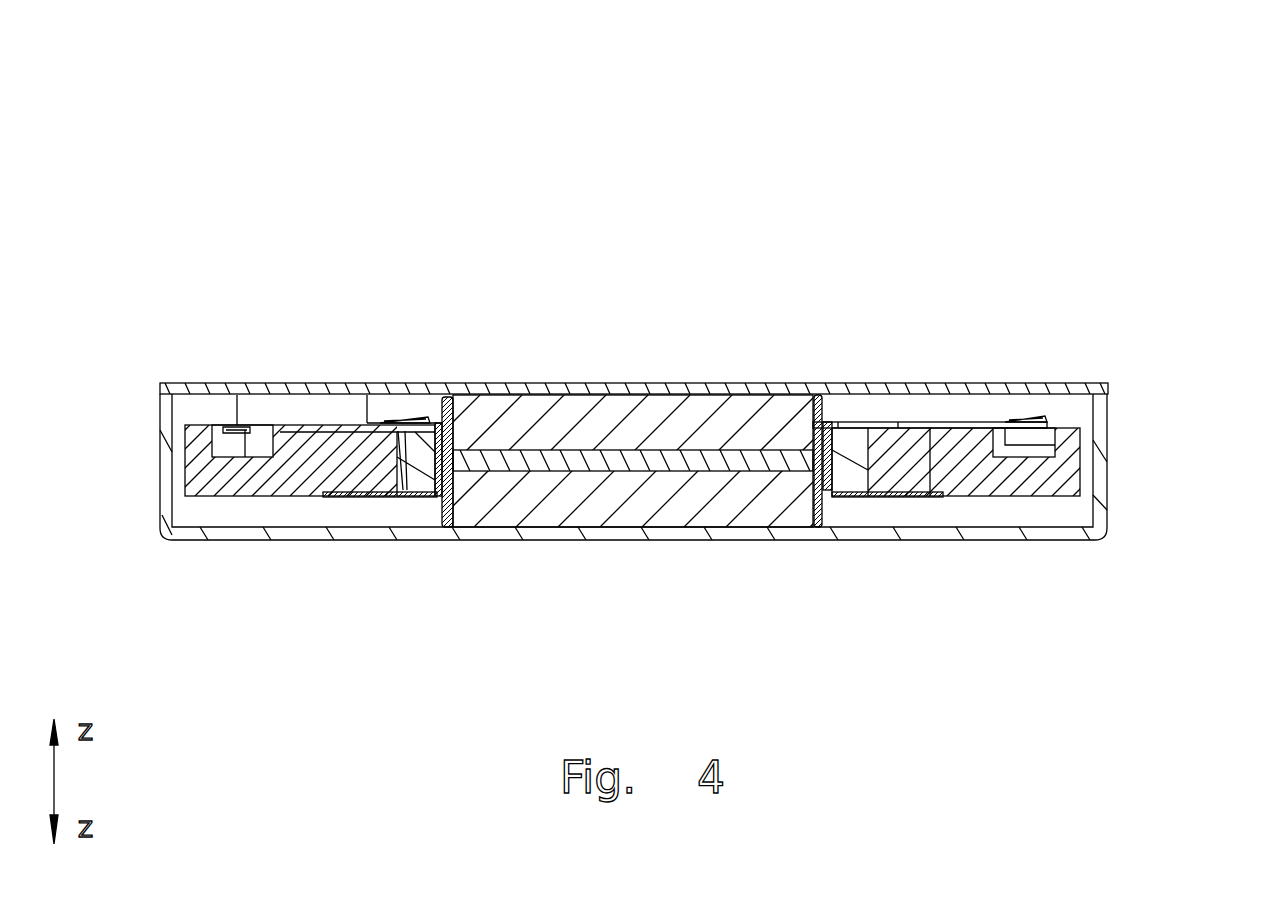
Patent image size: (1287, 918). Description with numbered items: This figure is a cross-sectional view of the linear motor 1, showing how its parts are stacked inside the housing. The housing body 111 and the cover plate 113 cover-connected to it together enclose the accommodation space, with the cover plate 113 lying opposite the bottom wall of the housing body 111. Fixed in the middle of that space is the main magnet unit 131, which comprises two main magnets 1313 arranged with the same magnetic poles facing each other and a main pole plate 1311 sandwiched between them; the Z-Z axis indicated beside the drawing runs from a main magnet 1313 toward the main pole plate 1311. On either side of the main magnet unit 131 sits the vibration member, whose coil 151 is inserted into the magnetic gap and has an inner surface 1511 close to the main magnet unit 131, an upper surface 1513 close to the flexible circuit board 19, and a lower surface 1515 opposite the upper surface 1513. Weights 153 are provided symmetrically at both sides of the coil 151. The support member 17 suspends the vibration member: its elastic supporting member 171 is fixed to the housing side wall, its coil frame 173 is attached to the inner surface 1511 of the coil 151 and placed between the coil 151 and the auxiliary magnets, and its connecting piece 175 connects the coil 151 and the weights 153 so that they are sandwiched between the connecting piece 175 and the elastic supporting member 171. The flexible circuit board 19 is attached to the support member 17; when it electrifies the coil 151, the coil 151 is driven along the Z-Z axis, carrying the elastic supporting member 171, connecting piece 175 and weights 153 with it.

The linear motor 1 is at (652, 64).
The housing body 111 is at (1095, 500).
The cover plate 113 is at (1095, 386).
The main magnet unit 131 is at (655, 272).
The main pole plate 1311 is at (520, 460).
The main magnet 1313 is at (655, 415).
The coil 151 is at (487, 613).
The inner surface 1511 is at (447, 470).
The upper surface 1513 is at (407, 440).
The lower surface 1515 is at (385, 498).
The weight 153 is at (275, 483).
The support member 17 is at (972, 628).
The elastic supporting member 171 is at (930, 432).
The coil frame 173 is at (835, 497).
The connecting piece 175 is at (878, 490).
The flexible circuit board 19 is at (880, 423).